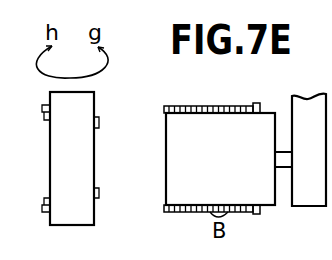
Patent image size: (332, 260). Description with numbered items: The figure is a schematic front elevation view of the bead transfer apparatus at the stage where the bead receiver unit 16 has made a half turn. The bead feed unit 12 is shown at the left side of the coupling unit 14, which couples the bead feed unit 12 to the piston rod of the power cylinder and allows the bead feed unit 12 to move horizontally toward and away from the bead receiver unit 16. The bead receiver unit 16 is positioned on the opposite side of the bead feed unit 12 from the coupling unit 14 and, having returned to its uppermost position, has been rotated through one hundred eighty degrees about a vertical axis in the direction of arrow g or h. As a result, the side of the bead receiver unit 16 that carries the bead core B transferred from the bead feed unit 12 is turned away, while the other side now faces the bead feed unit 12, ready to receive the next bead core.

The bead feed unit 12 is at (228, 166).
The coupling unit 14 is at (320, 168).
The bead receiver unit 16 is at (83, 166).